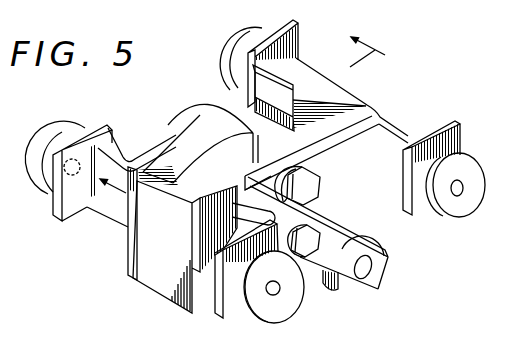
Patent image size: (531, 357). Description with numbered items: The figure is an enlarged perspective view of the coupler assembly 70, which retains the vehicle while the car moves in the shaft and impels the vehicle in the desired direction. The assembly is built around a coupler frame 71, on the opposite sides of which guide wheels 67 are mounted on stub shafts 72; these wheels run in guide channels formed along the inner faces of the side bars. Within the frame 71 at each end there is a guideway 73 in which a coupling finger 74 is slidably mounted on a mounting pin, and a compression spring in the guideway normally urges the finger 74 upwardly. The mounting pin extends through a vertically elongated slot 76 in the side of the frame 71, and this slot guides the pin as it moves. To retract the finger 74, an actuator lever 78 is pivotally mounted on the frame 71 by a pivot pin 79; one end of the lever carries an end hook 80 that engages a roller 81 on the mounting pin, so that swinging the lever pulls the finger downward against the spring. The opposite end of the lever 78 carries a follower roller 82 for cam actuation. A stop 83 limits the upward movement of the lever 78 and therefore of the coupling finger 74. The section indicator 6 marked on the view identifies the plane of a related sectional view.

The section line 6- 6 is at (242, 105).
The guide wheels 67 is at (240, 36).
The coupler assembly 70 is at (187, 100).
The coupler frame 71 is at (360, 100).
The stub shafts 72 is at (72, 171).
The guideway 73 is at (522, 296).
The coupling finger 74 is at (255, 86).
The vertically elongated slot 76 is at (266, 168).
The actuator lever 78 is at (335, 240).
The pivot pin 79 is at (311, 231).
The end hook 80 is at (202, 215).
The roller 81 is at (221, 232).
The follower roller 82 is at (345, 292).
The stop 83 is at (312, 192).